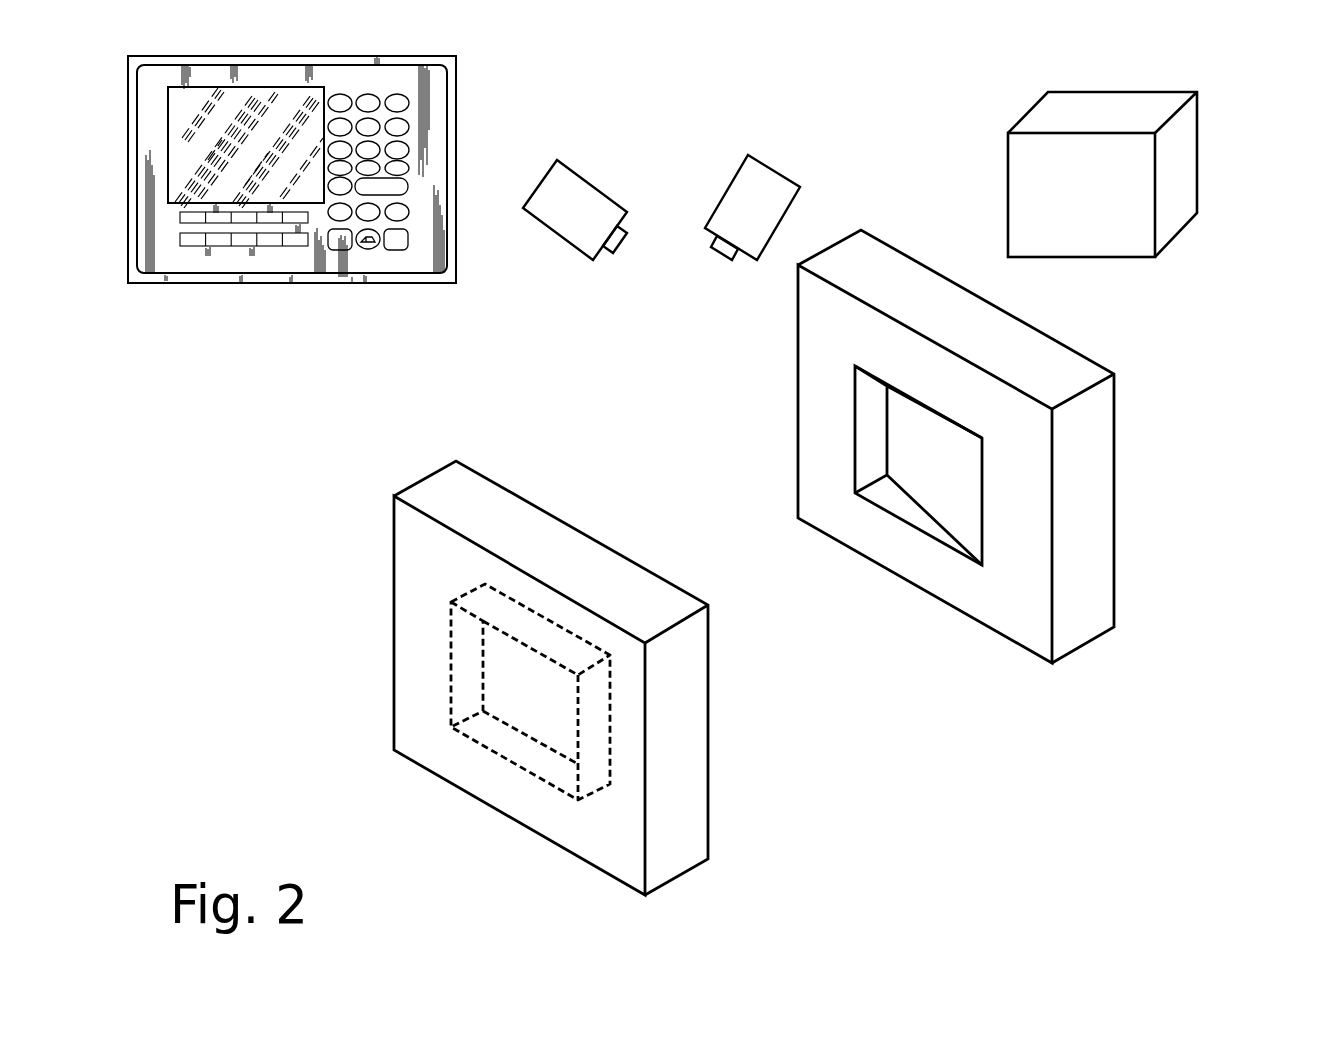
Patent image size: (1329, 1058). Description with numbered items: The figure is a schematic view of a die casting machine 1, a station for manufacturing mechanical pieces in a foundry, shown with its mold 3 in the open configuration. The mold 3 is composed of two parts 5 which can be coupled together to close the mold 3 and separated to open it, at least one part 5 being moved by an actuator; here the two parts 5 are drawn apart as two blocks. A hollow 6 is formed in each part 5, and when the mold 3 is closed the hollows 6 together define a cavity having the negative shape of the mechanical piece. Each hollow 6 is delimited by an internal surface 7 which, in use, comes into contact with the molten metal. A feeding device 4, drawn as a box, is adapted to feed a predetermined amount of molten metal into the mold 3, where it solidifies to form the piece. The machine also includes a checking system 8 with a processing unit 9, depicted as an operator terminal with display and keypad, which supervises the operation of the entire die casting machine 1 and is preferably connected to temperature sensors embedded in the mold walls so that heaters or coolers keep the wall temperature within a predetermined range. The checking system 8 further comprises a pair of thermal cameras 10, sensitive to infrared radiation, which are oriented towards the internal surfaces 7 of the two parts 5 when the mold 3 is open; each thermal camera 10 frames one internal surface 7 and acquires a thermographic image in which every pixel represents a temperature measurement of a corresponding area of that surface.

The die casting machine 1 is at (1152, 872).
The mold 3 is at (1231, 327).
The feeding device 4 is at (1116, 112).
The part 5 is at (1080, 502).
The hollow 6 is at (716, 583).
The internal surface 7 is at (929, 456).
The checking system 8 is at (893, 50).
The processing unit 9 is at (302, 258).
The thermal camera 10 is at (580, 212).